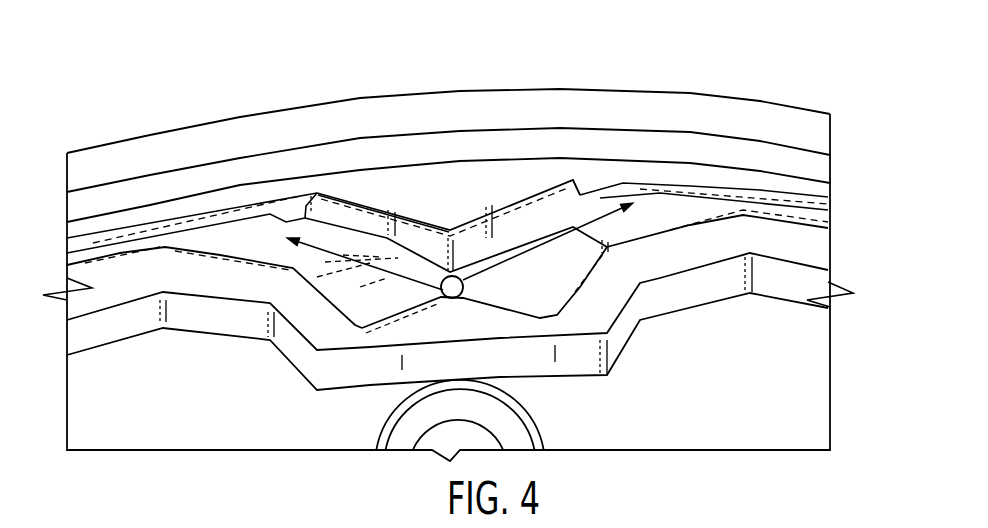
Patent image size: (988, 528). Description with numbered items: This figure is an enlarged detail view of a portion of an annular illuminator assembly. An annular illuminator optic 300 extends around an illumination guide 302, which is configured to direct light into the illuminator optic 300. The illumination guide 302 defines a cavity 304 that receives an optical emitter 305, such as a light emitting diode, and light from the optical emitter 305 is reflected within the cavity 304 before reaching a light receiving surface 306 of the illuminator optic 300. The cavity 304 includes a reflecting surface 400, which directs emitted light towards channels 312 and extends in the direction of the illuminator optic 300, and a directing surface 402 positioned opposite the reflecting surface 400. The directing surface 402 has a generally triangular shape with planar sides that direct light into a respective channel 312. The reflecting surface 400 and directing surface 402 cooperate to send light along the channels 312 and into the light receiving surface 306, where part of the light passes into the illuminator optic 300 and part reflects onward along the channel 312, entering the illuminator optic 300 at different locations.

The illuminator optic 300 is at (640, 105).
The illumination guide 302 is at (807, 258).
The cavity 304 is at (553, 188).
The optical emitter 305 is at (393, 315).
The light receiving surface 306 is at (177, 202).
The channel 312 is at (207, 253).
The reflecting surface 400 is at (460, 314).
The directing surface 402 is at (423, 218).